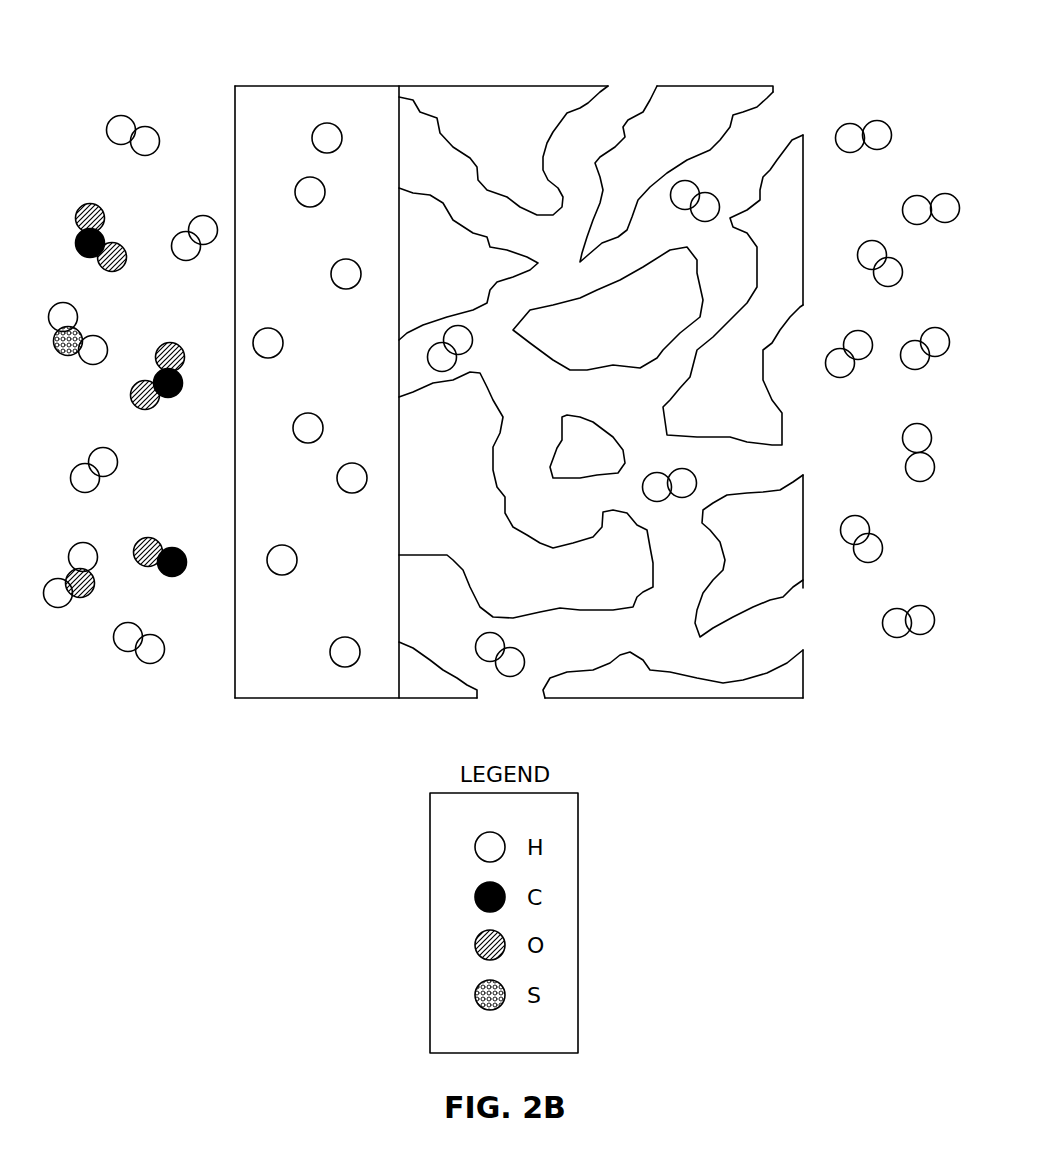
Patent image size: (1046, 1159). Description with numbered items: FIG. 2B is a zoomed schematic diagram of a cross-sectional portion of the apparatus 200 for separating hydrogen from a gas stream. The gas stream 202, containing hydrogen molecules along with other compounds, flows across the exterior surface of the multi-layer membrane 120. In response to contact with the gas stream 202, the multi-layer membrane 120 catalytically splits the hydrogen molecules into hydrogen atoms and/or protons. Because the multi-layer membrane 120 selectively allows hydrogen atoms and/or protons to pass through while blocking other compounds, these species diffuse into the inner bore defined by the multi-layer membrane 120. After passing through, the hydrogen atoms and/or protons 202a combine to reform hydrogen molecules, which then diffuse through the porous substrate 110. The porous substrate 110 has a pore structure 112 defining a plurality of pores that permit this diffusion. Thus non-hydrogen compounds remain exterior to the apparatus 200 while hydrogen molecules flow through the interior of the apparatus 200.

The gas stream 202 is at (162, 82).
The hydrogen atoms and/or protons 202a is at (852, 81).
The multi-layer membrane 120 is at (310, 86).
The porous substrate 110 is at (497, 86).
The pore structure 112 is at (633, 81).
The apparatus 200 is at (397, 734).